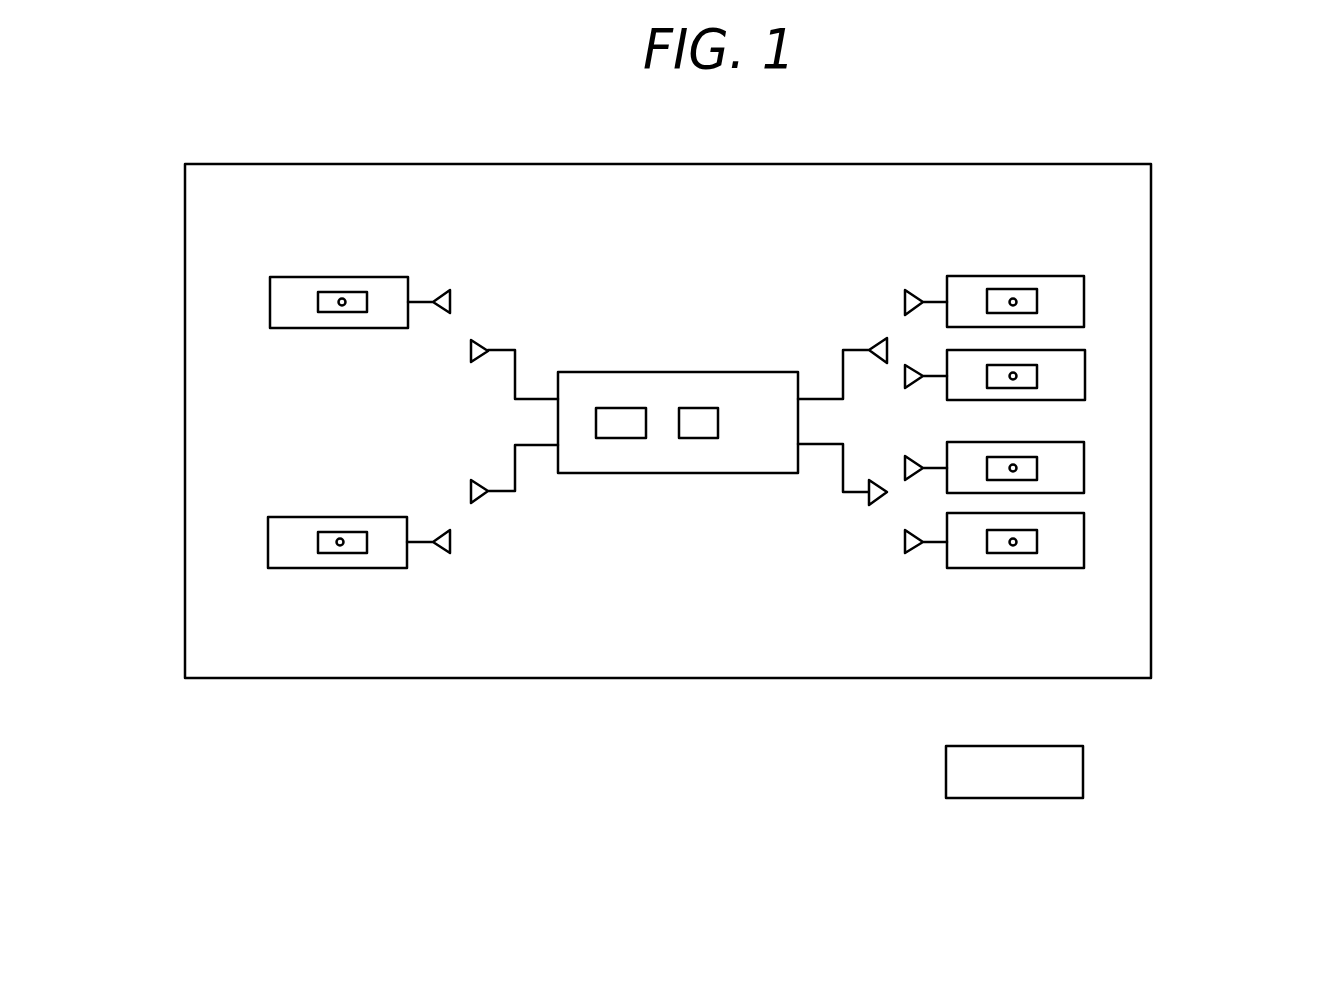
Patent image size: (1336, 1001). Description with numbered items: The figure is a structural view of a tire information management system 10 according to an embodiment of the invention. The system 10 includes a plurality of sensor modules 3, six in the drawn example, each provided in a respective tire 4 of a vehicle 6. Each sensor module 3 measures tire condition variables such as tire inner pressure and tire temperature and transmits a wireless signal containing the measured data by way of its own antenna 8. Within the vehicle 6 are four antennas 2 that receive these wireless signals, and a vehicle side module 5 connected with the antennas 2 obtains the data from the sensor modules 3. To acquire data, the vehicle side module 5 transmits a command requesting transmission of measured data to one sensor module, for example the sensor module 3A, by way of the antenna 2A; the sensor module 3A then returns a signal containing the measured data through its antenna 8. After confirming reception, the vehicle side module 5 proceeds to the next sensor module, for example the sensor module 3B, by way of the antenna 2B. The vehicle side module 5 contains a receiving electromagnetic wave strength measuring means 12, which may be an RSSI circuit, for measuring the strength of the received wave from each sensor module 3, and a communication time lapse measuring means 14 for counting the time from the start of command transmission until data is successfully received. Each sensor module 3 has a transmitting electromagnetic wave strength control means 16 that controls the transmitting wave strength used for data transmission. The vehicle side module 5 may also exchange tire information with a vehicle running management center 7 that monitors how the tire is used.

The vehicle 6 is at (985, 164).
The tire 4 is at (982, 276).
The sensor module 3 is at (355, 292).
The sensor module 3A is at (1037, 374).
The sensor module 3B is at (1037, 468).
The transmitting electromagnetic wave strength control means 16 is at (340, 297).
The antenna 8 is at (452, 300).
The antenna 2 is at (467, 350).
The antenna 2A is at (880, 340).
The antenna 2B is at (880, 503).
The vehicle side module 5 is at (650, 372).
The receiving electromagnetic wave strength measuring means 12 is at (627, 437).
The communication time lapse measuring means 14 is at (701, 412).
The tire information management system 10 is at (727, 651).
The vehicle running management center 7 is at (946, 773).